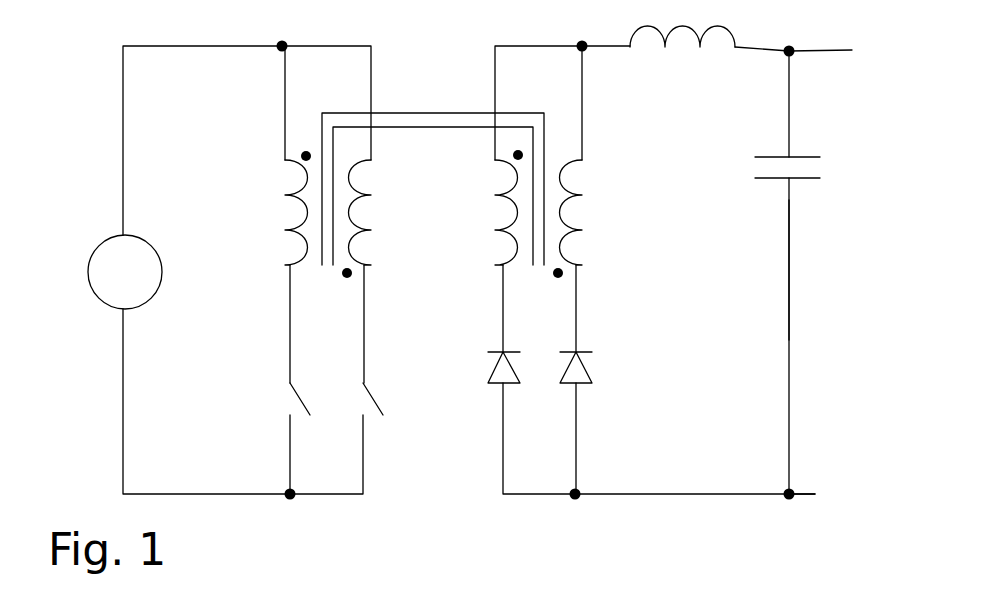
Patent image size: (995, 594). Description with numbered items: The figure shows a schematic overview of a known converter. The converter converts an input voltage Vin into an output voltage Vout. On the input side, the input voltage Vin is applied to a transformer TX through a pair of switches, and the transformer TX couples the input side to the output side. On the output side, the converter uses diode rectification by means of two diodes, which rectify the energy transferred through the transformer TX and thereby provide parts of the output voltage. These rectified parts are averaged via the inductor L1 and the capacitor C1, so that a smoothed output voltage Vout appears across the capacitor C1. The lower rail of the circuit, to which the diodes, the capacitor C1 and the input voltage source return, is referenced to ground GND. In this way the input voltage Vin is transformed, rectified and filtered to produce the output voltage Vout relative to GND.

The transformer TX is at (433, 170).
The inductor L1 is at (682, 59).
The capacitor C1 is at (808, 165).
The input voltage Vin is at (125, 272).
The output voltage Vout is at (838, 270).
The ground GND is at (836, 495).